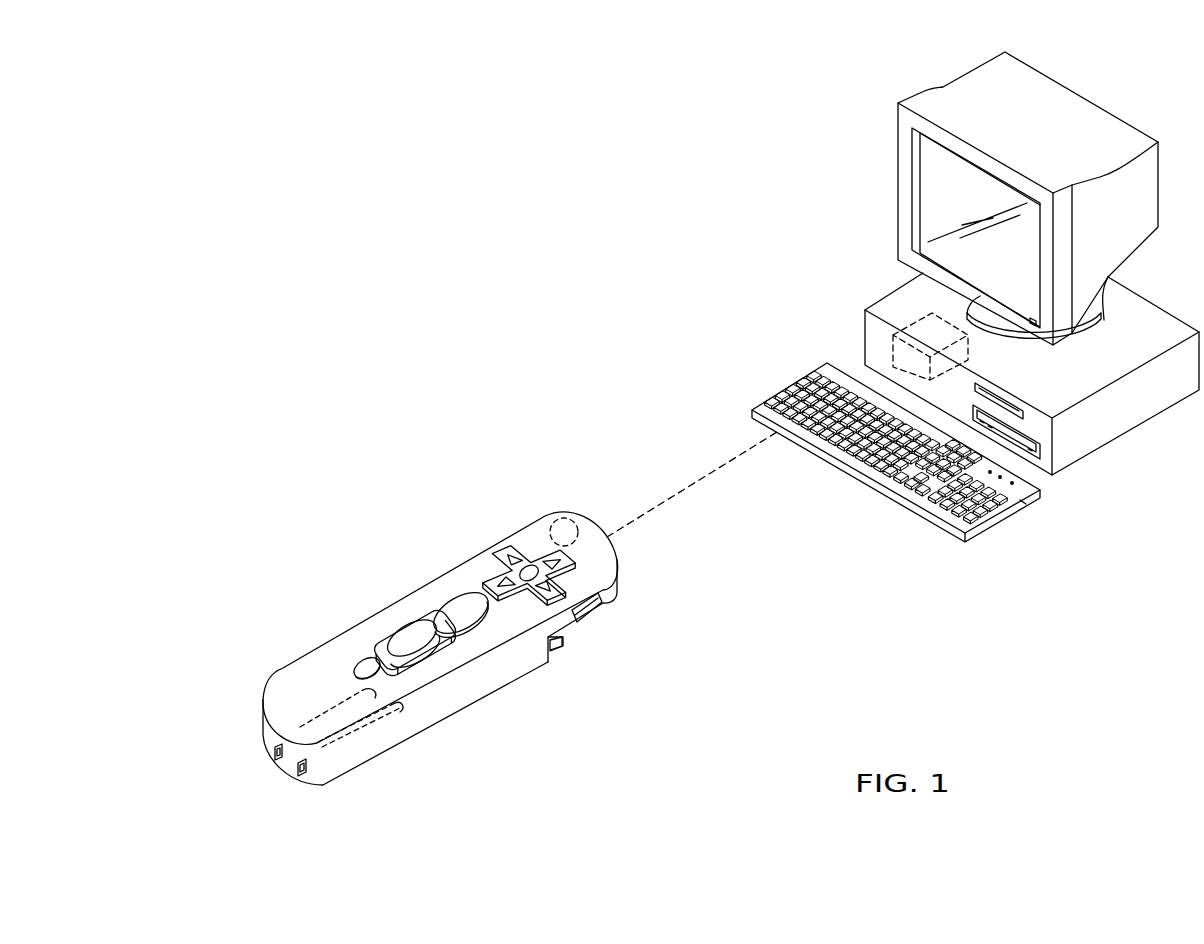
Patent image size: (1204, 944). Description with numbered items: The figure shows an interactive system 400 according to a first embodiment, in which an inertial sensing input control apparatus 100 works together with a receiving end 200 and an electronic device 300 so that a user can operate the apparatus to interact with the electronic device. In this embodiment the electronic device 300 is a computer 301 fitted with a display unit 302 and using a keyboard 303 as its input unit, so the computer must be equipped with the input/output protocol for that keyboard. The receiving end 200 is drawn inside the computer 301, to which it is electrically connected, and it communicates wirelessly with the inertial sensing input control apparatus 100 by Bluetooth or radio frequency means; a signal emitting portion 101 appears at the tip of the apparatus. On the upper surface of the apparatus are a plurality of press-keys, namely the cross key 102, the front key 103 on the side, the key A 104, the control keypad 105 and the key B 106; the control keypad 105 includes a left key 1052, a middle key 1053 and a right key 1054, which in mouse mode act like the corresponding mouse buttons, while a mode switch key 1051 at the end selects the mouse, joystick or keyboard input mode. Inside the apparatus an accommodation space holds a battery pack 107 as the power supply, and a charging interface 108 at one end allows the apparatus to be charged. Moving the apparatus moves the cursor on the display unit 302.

The inertial sensing input control apparatus 100 is at (235, 682).
The signal emitter 101 is at (564, 518).
The cross key 102 is at (500, 553).
The front key 103 is at (560, 647).
The key A 104 is at (453, 600).
The control keypad 105 is at (397, 612).
The mode switch key 1051 is at (600, 605).
The left key 1052 is at (390, 628).
The middle key 1053 is at (410, 637).
The right key 1054 is at (437, 650).
The key B 106 is at (357, 660).
The battery pack 107 is at (350, 738).
The charging interface 108 is at (300, 775).
The receiving end 200 is at (863, 345).
The electronic device 300 is at (815, 148).
The computer 301 is at (903, 298).
The display unit 302 is at (930, 178).
The keyboard 303 is at (878, 492).
The interactive system 400 is at (395, 214).